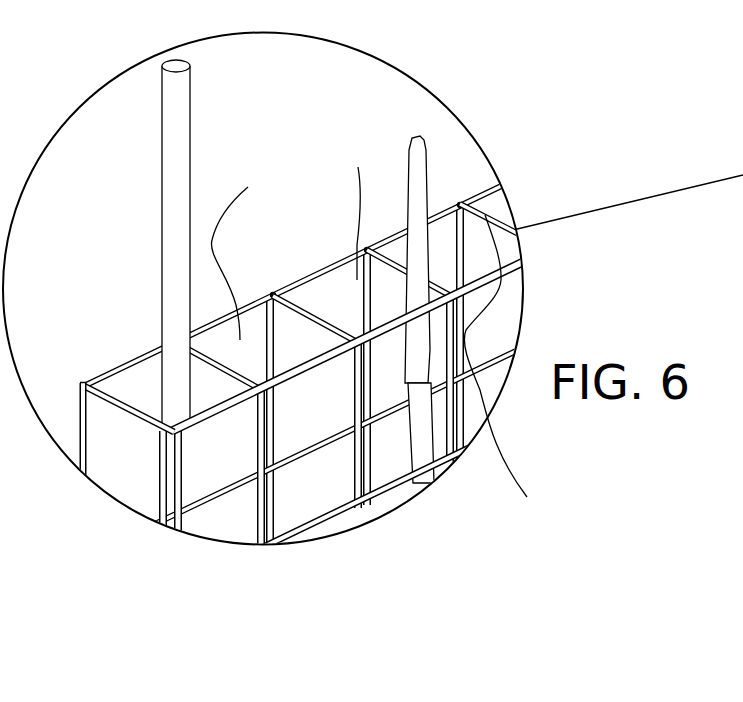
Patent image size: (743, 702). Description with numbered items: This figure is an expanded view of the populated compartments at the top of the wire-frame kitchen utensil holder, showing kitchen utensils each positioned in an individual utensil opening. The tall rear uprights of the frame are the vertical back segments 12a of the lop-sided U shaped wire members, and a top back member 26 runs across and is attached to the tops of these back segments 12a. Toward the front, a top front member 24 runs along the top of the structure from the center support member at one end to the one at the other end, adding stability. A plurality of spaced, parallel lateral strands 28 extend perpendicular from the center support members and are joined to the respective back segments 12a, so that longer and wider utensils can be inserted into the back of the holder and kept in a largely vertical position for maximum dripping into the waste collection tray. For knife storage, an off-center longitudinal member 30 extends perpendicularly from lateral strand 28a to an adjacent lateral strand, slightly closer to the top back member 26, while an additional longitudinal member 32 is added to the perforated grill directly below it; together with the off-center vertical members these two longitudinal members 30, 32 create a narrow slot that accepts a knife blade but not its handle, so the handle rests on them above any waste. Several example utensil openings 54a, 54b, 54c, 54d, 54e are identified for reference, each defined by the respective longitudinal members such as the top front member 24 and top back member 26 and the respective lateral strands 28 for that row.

The back segment 12a is at (81, 405).
The top front member 24 is at (380, 333).
The top back member 26 is at (307, 281).
The lateral strands 28 is at (227, 358).
The lateral strand 28a is at (121, 400).
The off-center longitudinal member 30 is at (485, 215).
The additional longitudinal member 32 is at (333, 510).
The utensil opening 54a is at (150, 393).
The utensil opening 54b is at (254, 247).
The utensil opening 54c is at (357, 209).
The utensil opening 54d is at (393, 252).
The utensil opening 54e is at (522, 375).